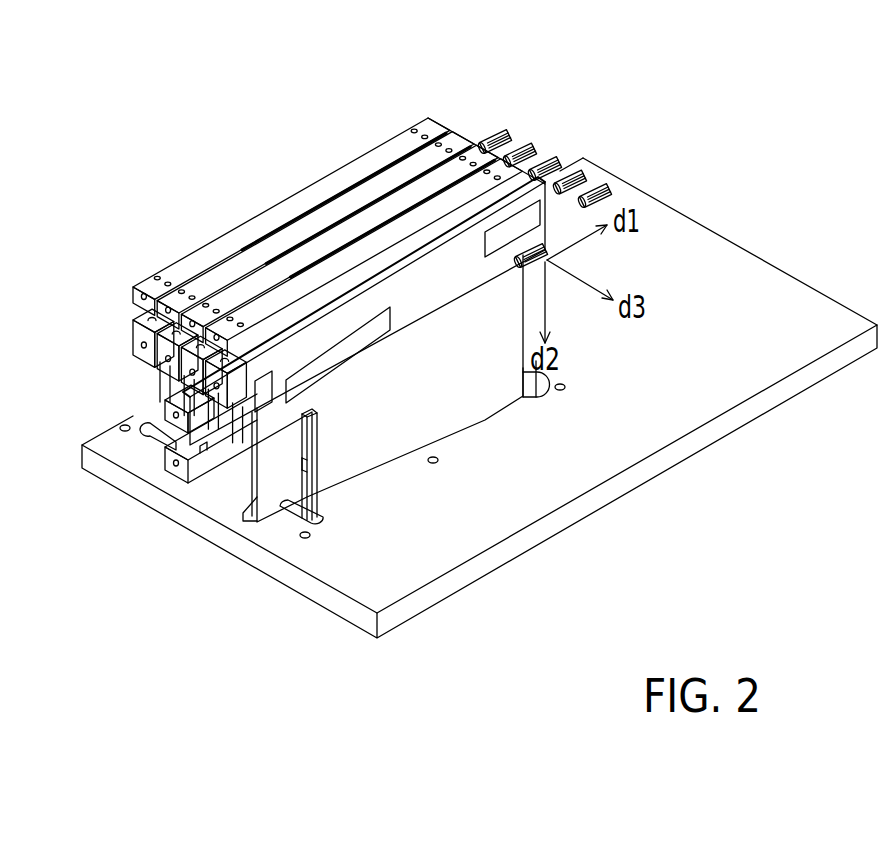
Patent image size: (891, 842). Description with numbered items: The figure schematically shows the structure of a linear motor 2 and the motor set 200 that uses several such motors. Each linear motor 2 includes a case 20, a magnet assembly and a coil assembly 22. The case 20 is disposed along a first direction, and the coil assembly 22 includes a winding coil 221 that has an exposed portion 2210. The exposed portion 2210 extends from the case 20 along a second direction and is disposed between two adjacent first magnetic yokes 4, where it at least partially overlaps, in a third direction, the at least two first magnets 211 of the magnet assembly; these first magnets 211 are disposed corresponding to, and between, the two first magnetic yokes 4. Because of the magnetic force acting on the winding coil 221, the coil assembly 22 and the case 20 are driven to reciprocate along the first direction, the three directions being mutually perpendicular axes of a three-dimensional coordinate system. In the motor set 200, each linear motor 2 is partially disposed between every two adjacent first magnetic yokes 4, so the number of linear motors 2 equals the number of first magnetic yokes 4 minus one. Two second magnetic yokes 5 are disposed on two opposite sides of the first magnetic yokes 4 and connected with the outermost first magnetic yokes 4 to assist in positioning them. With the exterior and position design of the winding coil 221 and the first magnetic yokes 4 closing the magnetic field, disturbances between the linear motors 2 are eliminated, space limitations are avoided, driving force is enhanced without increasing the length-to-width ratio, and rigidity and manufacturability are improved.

The motor set 200 is at (100, 182).
The linear motor 2 is at (187, 492).
The case 20 is at (172, 424).
The coil assembly 22 is at (274, 522).
The winding coil 221 is at (473, 393).
The exposed portion 2210 is at (288, 478).
The first magnets 211 is at (310, 460).
The first magnetic yokes 4 is at (310, 442).
The second magnetic yokes 5 is at (293, 432).